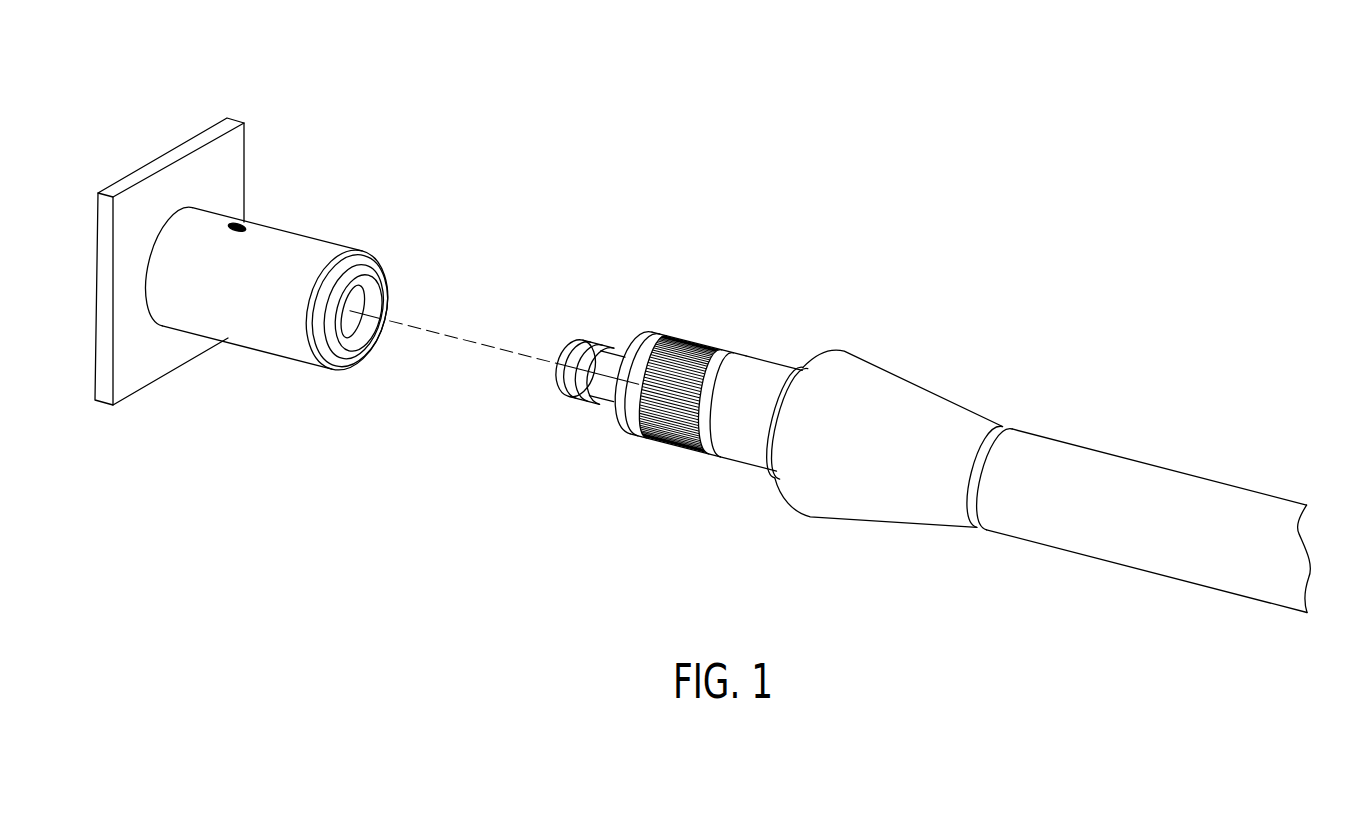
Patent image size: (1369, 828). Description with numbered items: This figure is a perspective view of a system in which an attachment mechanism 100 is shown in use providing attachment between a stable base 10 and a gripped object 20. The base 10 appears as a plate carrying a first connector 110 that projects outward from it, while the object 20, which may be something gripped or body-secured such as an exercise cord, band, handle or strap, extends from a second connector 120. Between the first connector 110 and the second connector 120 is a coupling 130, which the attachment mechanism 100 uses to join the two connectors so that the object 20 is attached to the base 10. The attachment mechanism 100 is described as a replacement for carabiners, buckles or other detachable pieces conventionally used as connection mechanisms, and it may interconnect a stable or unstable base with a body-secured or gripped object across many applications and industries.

The base 10 is at (170, 163).
The object 20 is at (1145, 480).
The attachment mechanism 100 is at (1079, 123).
The first connector 110 is at (328, 182).
The second connector 120 is at (853, 318).
The coupling 130 is at (611, 290).